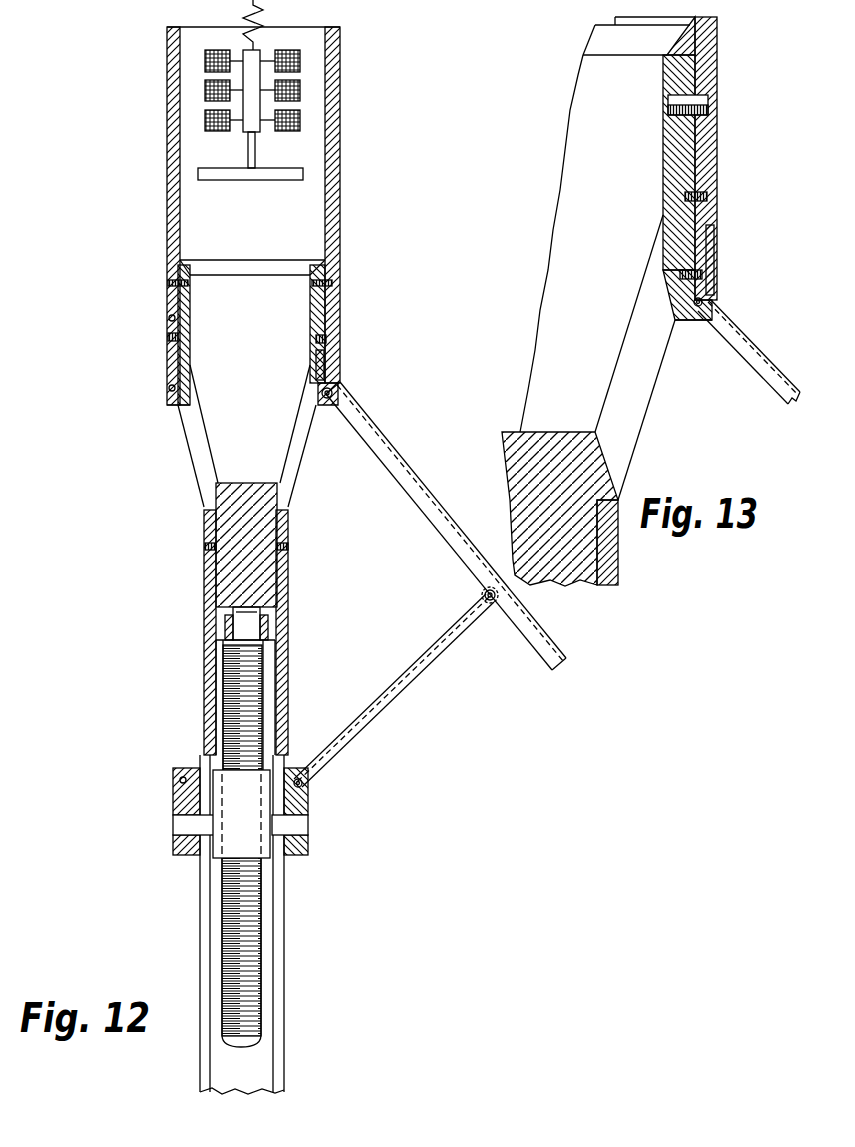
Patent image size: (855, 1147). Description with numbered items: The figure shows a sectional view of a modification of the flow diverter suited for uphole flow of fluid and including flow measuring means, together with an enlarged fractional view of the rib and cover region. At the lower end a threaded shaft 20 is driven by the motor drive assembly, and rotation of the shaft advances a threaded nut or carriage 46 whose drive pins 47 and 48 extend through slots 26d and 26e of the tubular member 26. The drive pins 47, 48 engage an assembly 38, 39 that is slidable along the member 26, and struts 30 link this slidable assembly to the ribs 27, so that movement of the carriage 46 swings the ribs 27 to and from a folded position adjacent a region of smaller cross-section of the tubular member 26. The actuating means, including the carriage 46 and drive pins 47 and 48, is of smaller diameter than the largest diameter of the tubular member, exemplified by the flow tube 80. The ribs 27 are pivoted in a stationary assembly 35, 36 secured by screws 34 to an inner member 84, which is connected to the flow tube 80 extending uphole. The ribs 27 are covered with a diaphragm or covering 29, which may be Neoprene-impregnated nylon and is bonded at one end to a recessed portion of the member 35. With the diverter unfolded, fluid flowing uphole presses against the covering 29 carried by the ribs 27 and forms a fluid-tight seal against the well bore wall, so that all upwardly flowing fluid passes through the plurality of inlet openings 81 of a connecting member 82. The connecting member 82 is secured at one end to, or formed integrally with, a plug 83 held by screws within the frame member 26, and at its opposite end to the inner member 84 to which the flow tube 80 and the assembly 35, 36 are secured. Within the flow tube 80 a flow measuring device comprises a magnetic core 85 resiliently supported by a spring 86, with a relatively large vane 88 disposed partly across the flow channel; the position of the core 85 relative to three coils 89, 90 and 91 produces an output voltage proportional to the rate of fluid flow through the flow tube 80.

In FIG. 12, the threaded shaft 20 is at (258, 1045).
In FIG. 12, the tubular member 26 is at (285, 652).
In FIG. 13, the tubular member 26 is at (618, 568).
In FIG. 12, the slot 26d is at (205, 925).
In FIG. 12, the slot 26e is at (278, 945).
In FIG. 12, the ribs 27 is at (412, 490).
In FIG. 13, the ribs 27 is at (770, 395).
In FIG. 12, the diaphragm or covering 29 is at (378, 430).
In FIG. 13, the diaphragm or covering 29 is at (742, 326).
In FIG. 12, the struts 30 is at (383, 710).
In FIG. 12, the screws 34 is at (178, 337).
In FIG. 13, the screws 34 is at (717, 198).
In FIG. 12, the stationary assembly member 35 is at (330, 354).
In FIG. 13, the stationary assembly member 35 is at (715, 220).
In FIG. 12, the stationary assembly member 36 is at (172, 398).
In FIG. 13, the stationary assembly member 36 is at (684, 323).
In FIG. 12, the slidable assembly 38 is at (183, 768).
In FIG. 12, the slidable assembly 39 is at (178, 792).
In FIG. 12, the threaded nut or carriage 46 is at (228, 848).
In FIG. 12, the drive pin 47 is at (176, 829).
In FIG. 12, the drive pin 48 is at (306, 826).
In FIG. 12, the flow tube 80 is at (338, 152).
In FIG. 13, the flow tube 80 is at (718, 44).
In FIG. 12, the inlet openings 81 is at (198, 455).
In FIG. 13, the inlet openings 81 is at (620, 418).
In FIG. 12, the connecting member 82 is at (338, 495).
In FIG. 13, the connecting member 82 is at (686, 412).
In FIG. 12, the plug 83 is at (220, 572).
In FIG. 13, the plug 83 is at (508, 430).
In FIG. 12, the inner member 84 is at (196, 300).
In FIG. 13, the inner member 84 is at (668, 138).
In FIG. 12, the magnetic core 85 is at (262, 52).
In FIG. 12, the spring 86 is at (258, 20).
In FIG. 12, the vane 88 is at (300, 177).
In FIG. 12, the coil 89 is at (205, 66).
In FIG. 12, the coil 90 is at (213, 97).
In FIG. 12, the coil 91 is at (205, 128).